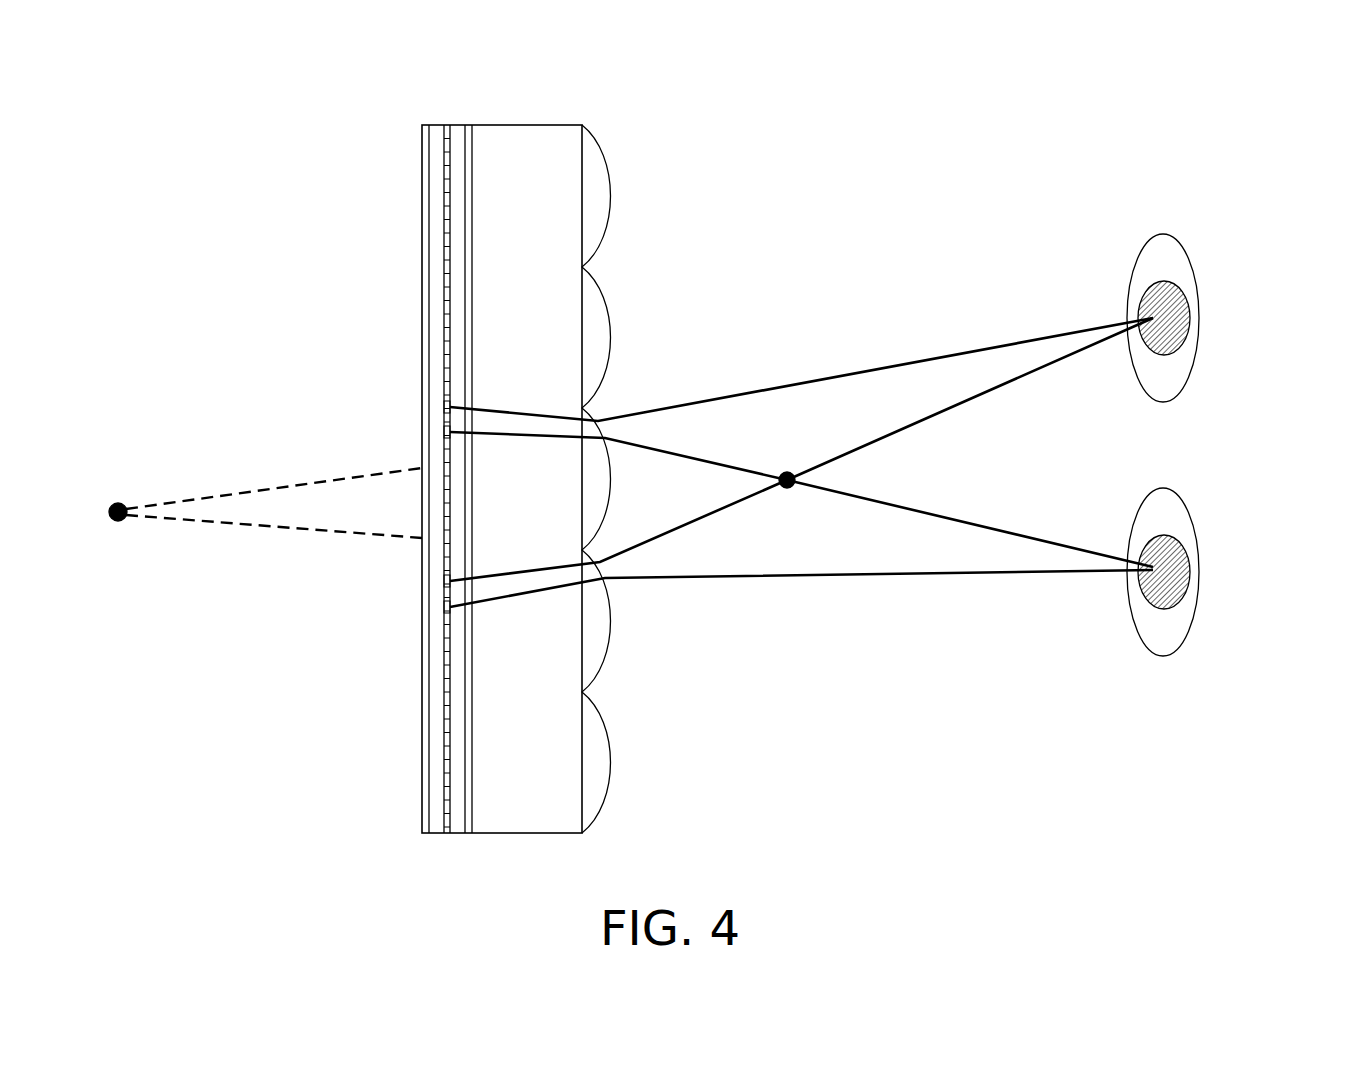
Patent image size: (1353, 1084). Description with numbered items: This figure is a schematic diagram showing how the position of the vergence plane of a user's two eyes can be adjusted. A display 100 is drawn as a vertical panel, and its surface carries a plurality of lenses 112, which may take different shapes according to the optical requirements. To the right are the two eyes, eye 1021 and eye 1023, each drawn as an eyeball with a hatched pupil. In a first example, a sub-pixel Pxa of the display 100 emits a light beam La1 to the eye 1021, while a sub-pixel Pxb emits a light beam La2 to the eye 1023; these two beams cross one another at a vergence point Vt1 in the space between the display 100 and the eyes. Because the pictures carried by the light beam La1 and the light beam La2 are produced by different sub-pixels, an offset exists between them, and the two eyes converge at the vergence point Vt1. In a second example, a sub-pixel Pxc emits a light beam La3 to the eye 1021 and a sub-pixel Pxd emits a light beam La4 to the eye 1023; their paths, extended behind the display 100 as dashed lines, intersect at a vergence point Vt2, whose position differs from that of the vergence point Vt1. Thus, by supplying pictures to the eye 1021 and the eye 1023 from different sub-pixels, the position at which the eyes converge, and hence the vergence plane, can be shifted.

The display 100 is at (594, 102).
The lenses 112 is at (597, 184).
The eye 1023 is at (1190, 262).
The eye 1021 is at (1190, 632).
The sub-pixel Pxa is at (445, 433).
The sub-pixel Pxb is at (445, 582).
The sub-pixel Pxc is at (445, 607).
The sub-pixel Pxd is at (445, 406).
The vergence point Vt1 is at (787, 470).
The vergence point Vt2 is at (118, 503).
The light beam La1 is at (678, 450).
The light beam La2 is at (663, 540).
The light beam La3 is at (905, 577).
The light beam La4 is at (950, 352).